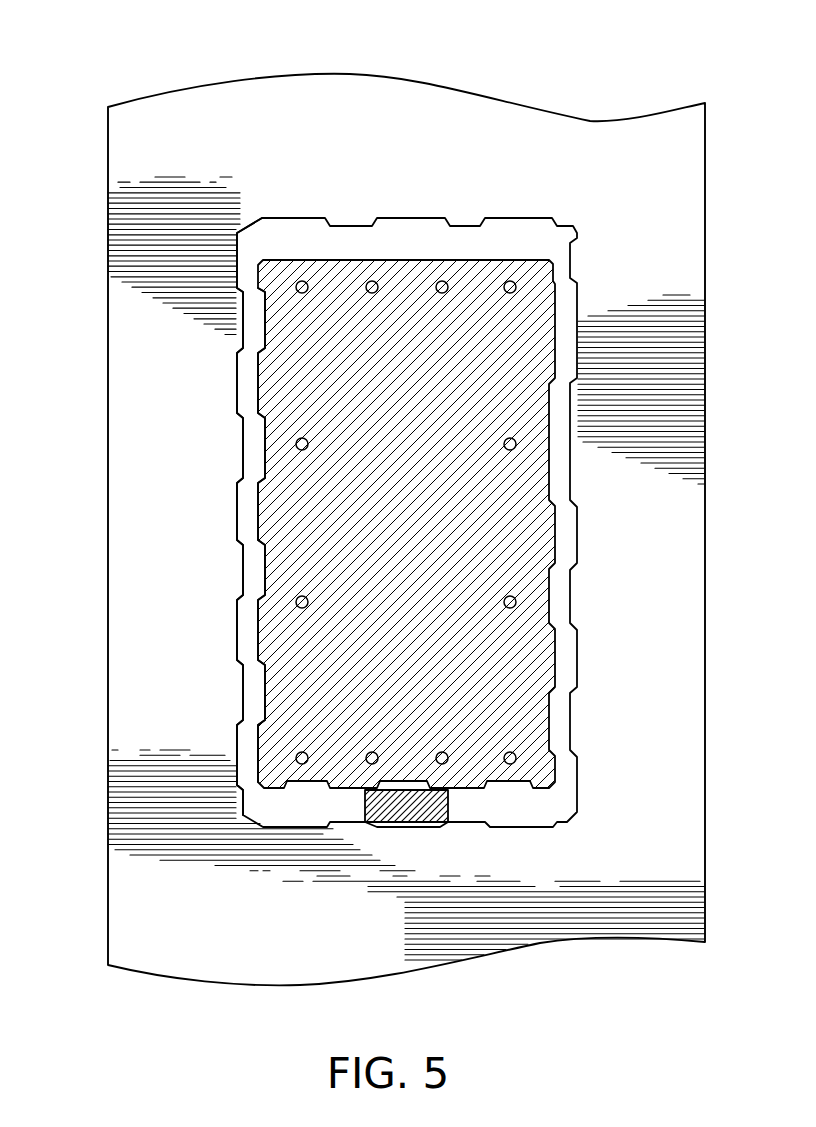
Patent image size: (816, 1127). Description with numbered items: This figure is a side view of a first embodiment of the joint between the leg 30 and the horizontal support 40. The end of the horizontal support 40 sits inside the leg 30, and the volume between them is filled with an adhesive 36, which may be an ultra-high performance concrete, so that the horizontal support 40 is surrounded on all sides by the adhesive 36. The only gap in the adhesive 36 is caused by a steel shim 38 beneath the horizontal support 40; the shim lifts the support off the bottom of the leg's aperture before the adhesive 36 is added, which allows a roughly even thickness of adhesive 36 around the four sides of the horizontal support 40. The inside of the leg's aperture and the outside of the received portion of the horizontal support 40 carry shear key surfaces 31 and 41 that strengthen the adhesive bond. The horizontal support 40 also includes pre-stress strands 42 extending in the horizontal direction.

The leg 30 is at (665, 122).
The shear key surfaces 31 is at (242, 568).
The adhesive 36 is at (418, 233).
The steel shim 38 is at (415, 812).
The horizontal support 40 is at (492, 270).
The shear key surfaces 41 is at (258, 638).
The pre-stress strands 42 is at (573, 256).